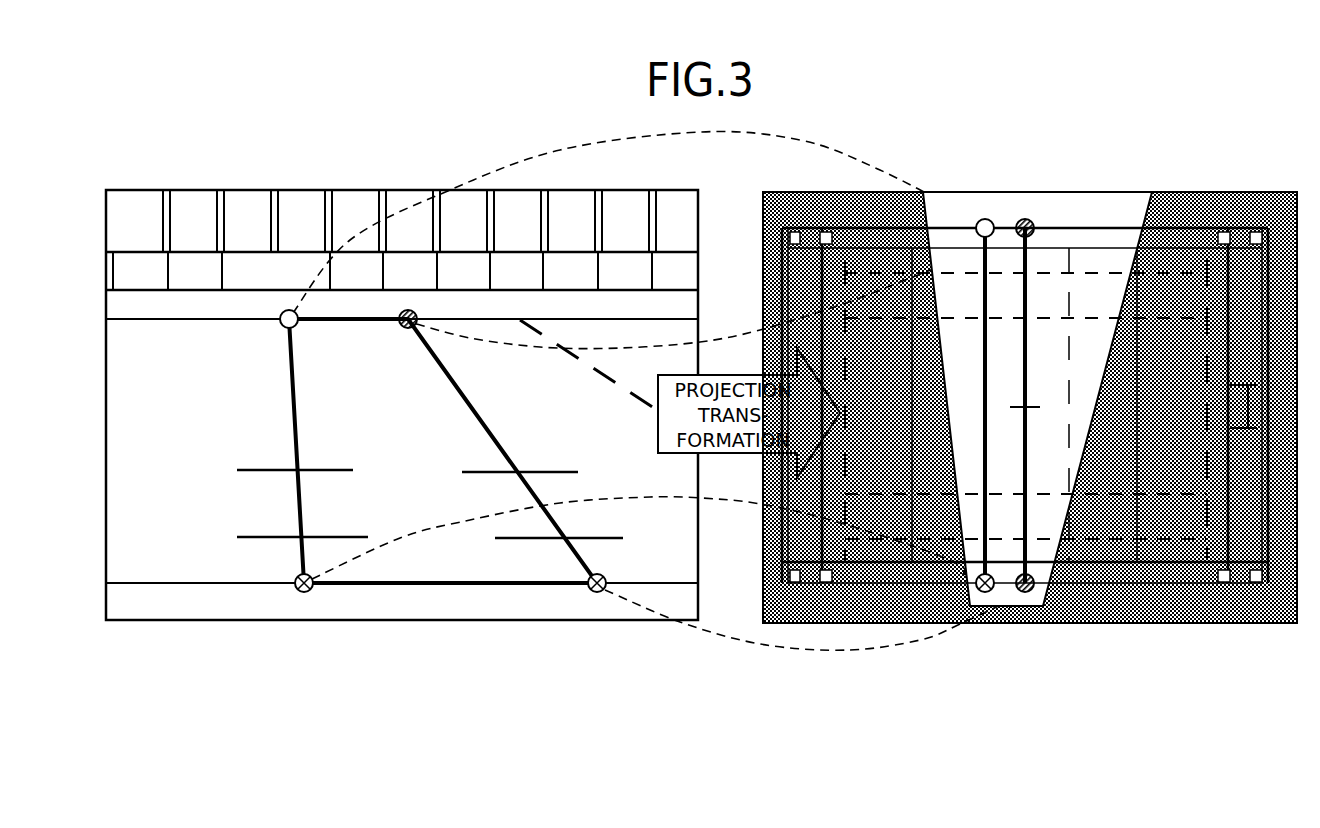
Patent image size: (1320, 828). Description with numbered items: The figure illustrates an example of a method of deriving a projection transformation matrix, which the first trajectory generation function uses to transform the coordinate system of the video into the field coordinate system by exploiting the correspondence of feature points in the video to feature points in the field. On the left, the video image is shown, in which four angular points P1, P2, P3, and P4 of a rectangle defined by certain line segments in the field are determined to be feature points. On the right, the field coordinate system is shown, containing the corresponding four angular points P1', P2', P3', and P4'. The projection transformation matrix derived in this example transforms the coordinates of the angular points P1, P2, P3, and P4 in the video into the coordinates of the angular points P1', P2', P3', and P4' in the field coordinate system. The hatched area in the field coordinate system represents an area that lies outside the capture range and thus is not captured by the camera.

The angular point P1 is at (302, 630).
The angular point P2 is at (596, 630).
The angular point P3 is at (286, 229).
The angular point P4 is at (406, 229).
The angular point P1' is at (971, 630).
The angular point P2' is at (1027, 630).
The angular point P3' is at (989, 184).
The angular point P4' is at (1046, 184).